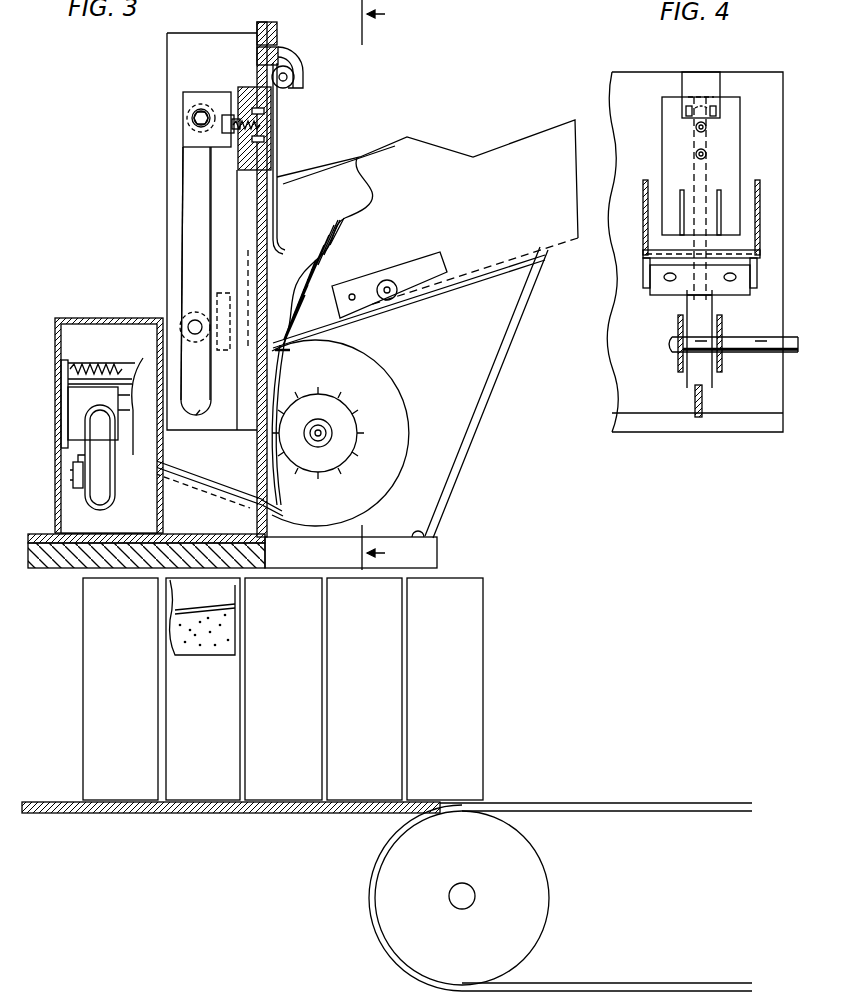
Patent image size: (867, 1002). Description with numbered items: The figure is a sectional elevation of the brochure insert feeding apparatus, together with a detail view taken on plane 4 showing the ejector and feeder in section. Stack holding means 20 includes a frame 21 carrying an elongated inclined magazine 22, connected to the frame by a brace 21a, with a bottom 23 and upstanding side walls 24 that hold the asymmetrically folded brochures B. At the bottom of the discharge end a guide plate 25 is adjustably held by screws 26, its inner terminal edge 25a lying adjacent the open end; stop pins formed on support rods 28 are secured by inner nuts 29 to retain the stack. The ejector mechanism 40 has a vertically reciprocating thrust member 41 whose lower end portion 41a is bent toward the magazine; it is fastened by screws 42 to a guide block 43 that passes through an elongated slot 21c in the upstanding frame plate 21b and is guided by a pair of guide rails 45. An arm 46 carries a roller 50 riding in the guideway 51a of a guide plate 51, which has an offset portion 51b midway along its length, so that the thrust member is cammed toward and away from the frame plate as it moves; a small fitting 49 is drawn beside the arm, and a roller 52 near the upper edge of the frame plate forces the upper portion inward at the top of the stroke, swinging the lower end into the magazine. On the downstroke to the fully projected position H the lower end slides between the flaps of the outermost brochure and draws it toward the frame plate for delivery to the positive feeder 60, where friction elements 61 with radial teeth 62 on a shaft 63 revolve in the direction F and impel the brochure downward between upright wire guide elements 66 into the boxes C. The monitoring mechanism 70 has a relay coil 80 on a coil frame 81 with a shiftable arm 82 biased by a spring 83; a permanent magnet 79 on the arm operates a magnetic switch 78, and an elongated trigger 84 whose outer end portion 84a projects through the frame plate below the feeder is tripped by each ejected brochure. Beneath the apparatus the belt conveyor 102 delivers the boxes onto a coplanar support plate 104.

In FIG. 3, the stack holding means 20 is at (384, 313).
In FIG. 3, the frame 21 is at (82, 571).
In FIG. 4, the frame 21 is at (740, 425).
In FIG. 3, the brace 21a is at (480, 400).
In FIG. 3, the upstanding frame plate 21b is at (266, 26).
In FIG. 4, the upstanding frame plate 21b is at (755, 76).
In FIG. 3, the elongated slot 21c is at (258, 252).
In FIG. 4, the elongated slot 21c is at (708, 242).
In FIG. 3, the magazine 22 is at (517, 148).
In FIG. 4, the magazine 22 is at (760, 182).
In FIG. 3, the bottom 23 is at (541, 254).
In FIG. 3, the side walls 24 is at (535, 200).
In FIG. 4, the side walls 24 is at (643, 200).
In FIG. 3, the guide plate 25 is at (355, 335).
In FIG. 4, the guide plate 25 is at (733, 288).
In FIG. 3, the inner terminal edge 25a is at (280, 352).
In FIG. 3, the screws 26 is at (372, 348).
In FIG. 4, the screws 26 is at (664, 278).
In FIG. 3, the support rods 28 is at (325, 297).
In FIG. 3, the inner nuts 29 is at (387, 280).
In FIG. 3, the ejector mechanism 40 is at (282, 151).
In FIG. 3, the thrust member 41 is at (278, 178).
In FIG. 4, the thrust member 41 is at (722, 144).
In FIG. 3, the lower end portion 41a is at (281, 250).
In FIG. 3, the screws 42 is at (272, 143).
In FIG. 4, the screws 42 is at (697, 152).
In FIG. 3, the guide block 43 is at (255, 88).
In FIG. 3, the guide rails 45 is at (241, 398).
In FIG. 3, the arm 46 is at (227, 97).
In FIG. 3, the clamp 49 is at (218, 135).
In FIG. 3, the roller 50 is at (185, 108).
In FIG. 3, the guide plate 51 is at (168, 172).
In FIG. 3, the guideway 51a is at (183, 292).
In FIG. 3, the offset portion 51b is at (193, 210).
In FIG. 3, the roller 52 is at (288, 88).
In FIG. 3, the positive feeder 60 is at (290, 391).
In FIG. 3, the friction elements 61 is at (358, 418).
In FIG. 4, the friction elements 61 is at (677, 362).
In FIG. 3, the teeth 62 is at (342, 467).
In FIG. 3, the shaft 63 is at (322, 430).
In FIG. 3, the guide elements 66 is at (281, 494).
In FIG. 4, the guide elements 66 is at (686, 303).
In FIG. 3, the operation monitoring mechanism 70 is at (168, 463).
In FIG. 3, the magnetic switch 78 is at (100, 488).
In FIG. 3, the permanent magnet 79 is at (74, 483).
In FIG. 3, the relay coil 80 is at (77, 403).
In FIG. 3, the coil frame 81 is at (77, 380).
In FIG. 3, the shiftable arm 82 is at (130, 397).
In FIG. 3, the spring 83 is at (106, 352).
In FIG. 3, the trigger 84 is at (212, 500).
In FIG. 4, the trigger 84 is at (703, 406).
In FIG. 3, the outer end portion 84a is at (287, 521).
In FIG. 3, the belt conveyor 102 is at (622, 806).
In FIG. 3, the support plate 104 is at (268, 808).
In FIG. 3, the section plane 4— 4 is at (380, 285).
In FIG. 3, the brochures B is at (320, 255).
In FIG. 3, the boxes C is at (452, 603).
In FIG. 3, the direction of rotation F is at (291, 436).
In FIG. 3, the fully projected position H is at (262, 358).